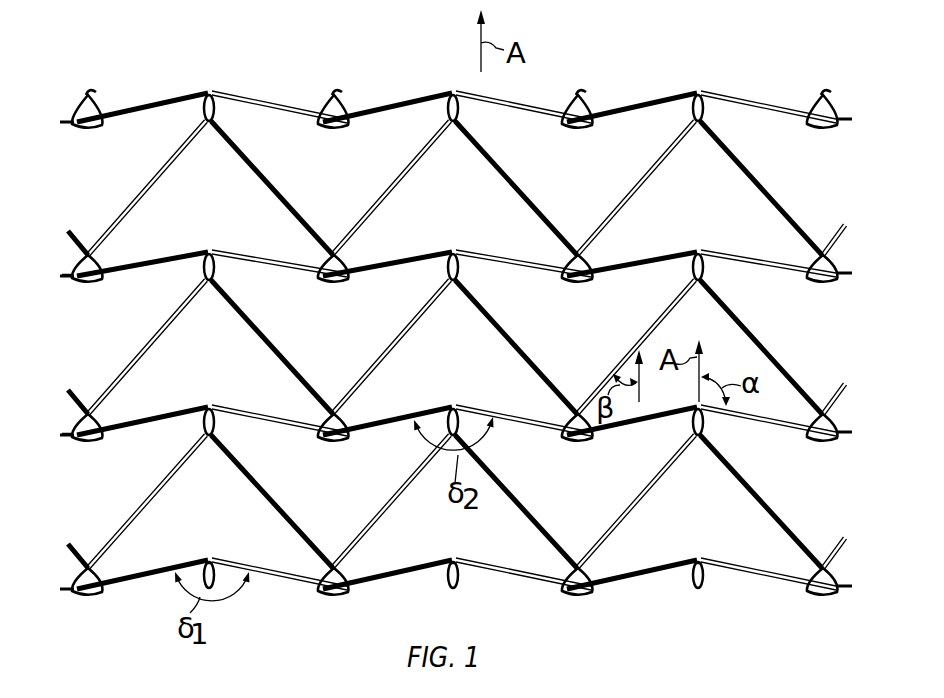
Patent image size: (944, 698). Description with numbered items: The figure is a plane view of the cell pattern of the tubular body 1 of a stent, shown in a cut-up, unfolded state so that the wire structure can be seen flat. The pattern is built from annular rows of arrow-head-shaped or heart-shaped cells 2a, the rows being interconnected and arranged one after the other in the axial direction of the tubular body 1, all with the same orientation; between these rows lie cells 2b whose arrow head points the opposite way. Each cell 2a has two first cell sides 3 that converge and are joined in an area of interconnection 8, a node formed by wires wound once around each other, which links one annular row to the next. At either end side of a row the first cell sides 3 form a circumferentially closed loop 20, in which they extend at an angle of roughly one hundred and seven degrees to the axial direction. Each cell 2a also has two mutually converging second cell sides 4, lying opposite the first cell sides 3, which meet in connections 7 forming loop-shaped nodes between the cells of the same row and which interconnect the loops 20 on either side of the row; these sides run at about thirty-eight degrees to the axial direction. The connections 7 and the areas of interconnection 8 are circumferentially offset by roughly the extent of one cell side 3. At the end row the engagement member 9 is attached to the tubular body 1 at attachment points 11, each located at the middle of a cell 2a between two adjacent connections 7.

The tubular body 1 is at (204, 48).
The cell 2a is at (183, 238).
The cell 2b is at (352, 190).
The first cell side 3 is at (147, 268).
The second cell side 4 is at (163, 173).
The connection 7 is at (336, 290).
The area of interconnection 8 is at (220, 270).
The engagement member 9 is at (216, 596).
The attachment point 11 is at (217, 580).
The circumferentially closed loop 20 is at (60, 276).